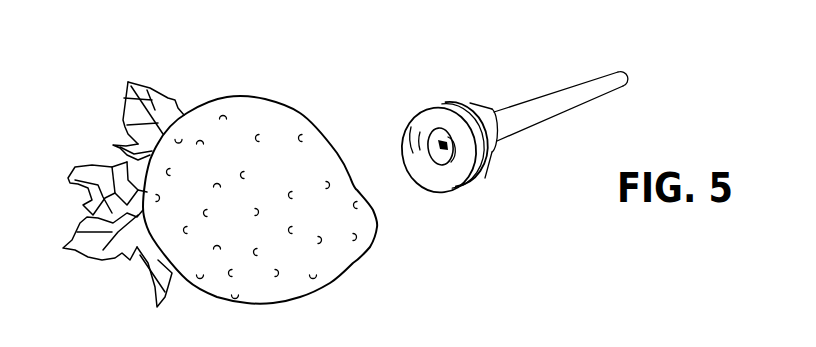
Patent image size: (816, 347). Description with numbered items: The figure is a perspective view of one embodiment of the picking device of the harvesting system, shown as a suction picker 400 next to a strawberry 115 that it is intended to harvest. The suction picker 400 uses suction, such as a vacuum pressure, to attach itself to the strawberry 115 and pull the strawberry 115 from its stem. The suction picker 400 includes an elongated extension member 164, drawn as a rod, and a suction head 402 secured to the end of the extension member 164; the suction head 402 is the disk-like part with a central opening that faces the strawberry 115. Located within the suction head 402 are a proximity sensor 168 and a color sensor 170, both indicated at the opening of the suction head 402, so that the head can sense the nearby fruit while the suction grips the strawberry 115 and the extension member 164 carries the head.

The strawberry 115 is at (250, 108).
The extension member 164 is at (535, 106).
The proximity sensor 168 is at (443, 165).
The color sensor 170 is at (435, 128).
The suction picker 400 is at (671, 90).
The suction head 402 is at (492, 160).